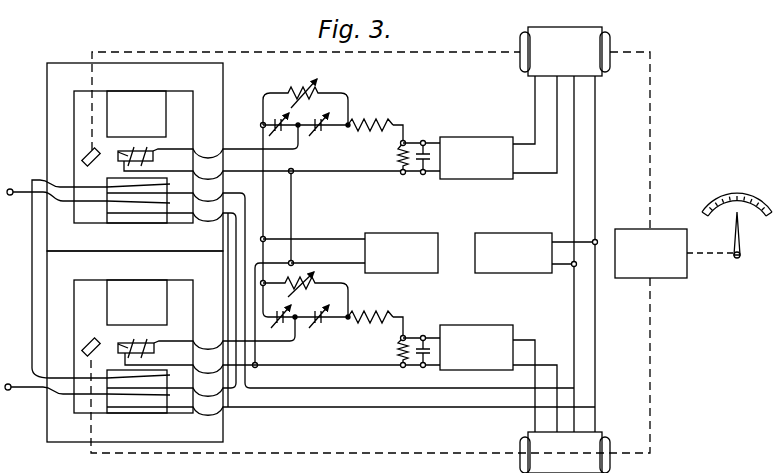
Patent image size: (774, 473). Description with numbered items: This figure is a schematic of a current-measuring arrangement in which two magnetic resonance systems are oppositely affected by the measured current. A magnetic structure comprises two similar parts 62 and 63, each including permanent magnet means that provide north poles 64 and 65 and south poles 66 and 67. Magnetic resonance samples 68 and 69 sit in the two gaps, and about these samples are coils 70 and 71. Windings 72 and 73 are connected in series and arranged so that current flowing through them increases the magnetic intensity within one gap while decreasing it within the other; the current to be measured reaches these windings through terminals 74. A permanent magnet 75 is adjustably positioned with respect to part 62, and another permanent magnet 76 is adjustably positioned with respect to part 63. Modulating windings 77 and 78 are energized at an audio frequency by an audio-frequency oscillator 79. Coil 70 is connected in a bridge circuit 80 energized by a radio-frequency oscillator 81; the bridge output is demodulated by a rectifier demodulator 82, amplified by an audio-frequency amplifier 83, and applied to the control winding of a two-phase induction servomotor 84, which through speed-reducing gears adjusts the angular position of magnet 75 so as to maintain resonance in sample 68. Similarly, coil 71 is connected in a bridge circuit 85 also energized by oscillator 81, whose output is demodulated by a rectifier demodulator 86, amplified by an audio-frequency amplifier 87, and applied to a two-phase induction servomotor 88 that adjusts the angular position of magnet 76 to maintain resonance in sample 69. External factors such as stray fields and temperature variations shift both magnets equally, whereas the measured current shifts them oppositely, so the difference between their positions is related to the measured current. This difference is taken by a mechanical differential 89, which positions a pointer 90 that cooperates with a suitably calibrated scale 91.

The part of magnetic structure 62 is at (57, 123).
The part of magnetic structure 63 is at (53, 312).
The north pole 64 is at (163, 129).
The north pole 65 is at (160, 318).
The south pole 66 is at (115, 178).
The south pole 67 is at (116, 370).
The magnetic resonance sample 68 is at (152, 156).
The magnetic resonance sample 69 is at (153, 349).
The coil 70 is at (126, 153).
The coil 71 is at (126, 344).
The winding 72 is at (110, 186).
The winding 73 is at (168, 377).
The terminals 74 is at (10, 198).
The permanent magnet 75 is at (87, 150).
The permanent magnet 76 is at (89, 336).
The modulating winding 77 is at (110, 203).
The modulating winding 78 is at (136, 408).
The audio-frequency oscillator 79 is at (506, 233).
The bridge circuit 80 is at (327, 114).
The radio-frequency oscillator 81 is at (396, 233).
The rectifier demodulator 82 is at (405, 128).
The audio-frequency amplifier 83 is at (474, 137).
The two-phase induction servomotor 84 is at (592, 34).
The bridge circuit 85 is at (316, 341).
The rectifier demodulator 86 is at (405, 321).
The audio-frequency amplifier 87 is at (474, 325).
The two-phase induction servomotor 88 is at (604, 466).
The mechanical differential 89 is at (668, 278).
The pointer 90 is at (742, 243).
The scale 91 is at (737, 193).